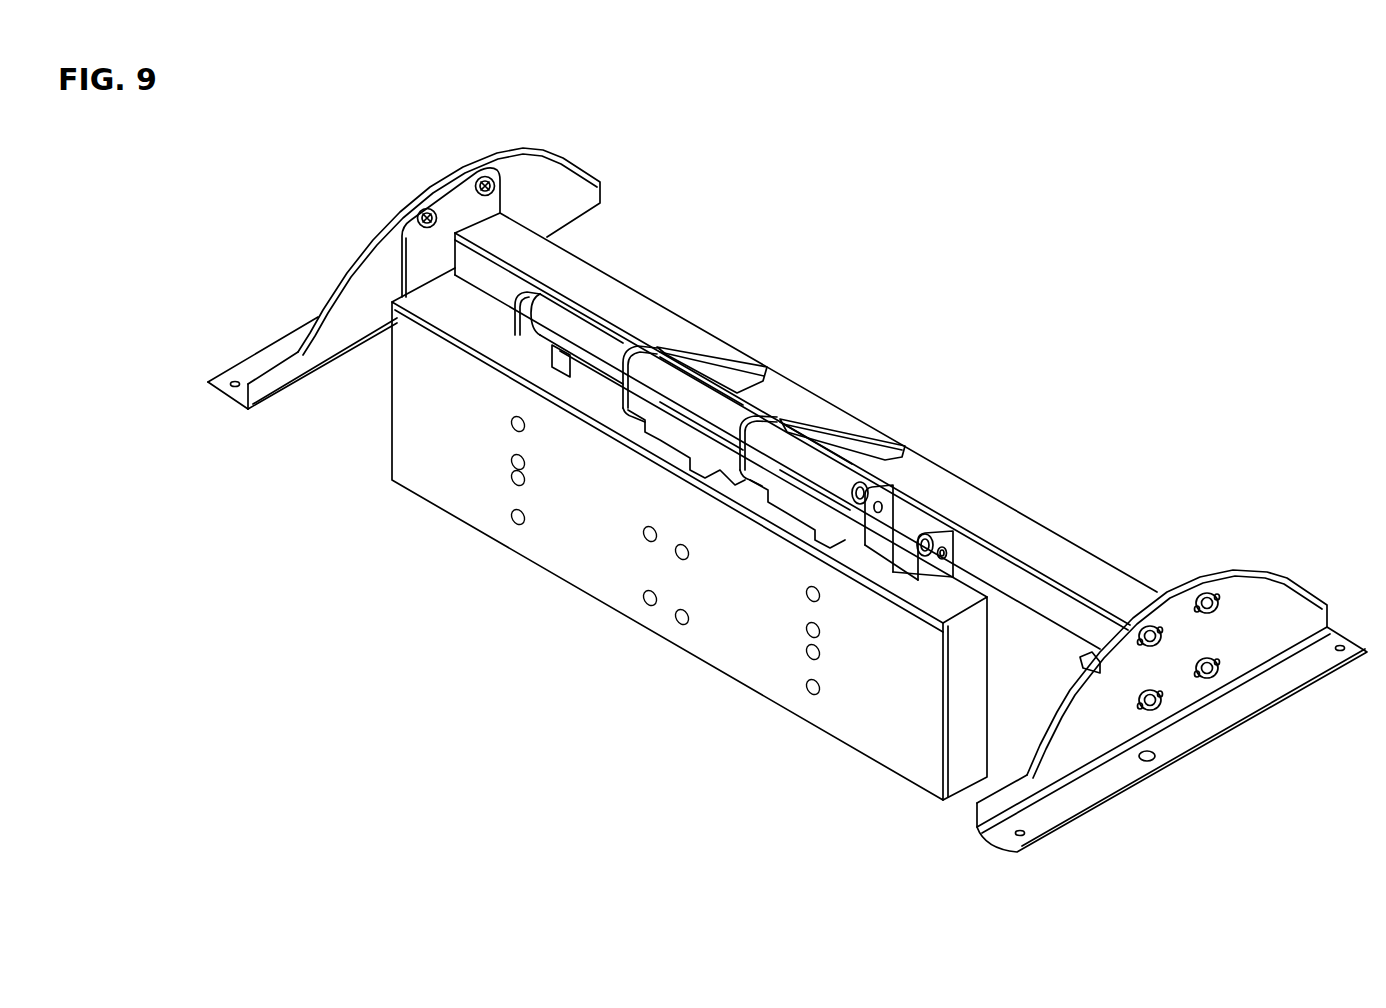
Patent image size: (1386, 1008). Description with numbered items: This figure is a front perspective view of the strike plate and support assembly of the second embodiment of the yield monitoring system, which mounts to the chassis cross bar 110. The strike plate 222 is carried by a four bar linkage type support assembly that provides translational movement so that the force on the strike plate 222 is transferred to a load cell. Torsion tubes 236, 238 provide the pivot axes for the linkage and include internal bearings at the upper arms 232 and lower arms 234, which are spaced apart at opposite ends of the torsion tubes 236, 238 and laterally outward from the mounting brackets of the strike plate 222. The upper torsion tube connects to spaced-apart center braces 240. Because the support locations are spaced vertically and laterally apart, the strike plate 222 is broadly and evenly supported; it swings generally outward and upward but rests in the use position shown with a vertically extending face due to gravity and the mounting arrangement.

The chassis cross bar 110 is at (1035, 544).
The strike plate 222 is at (706, 637).
The upper arms 232 is at (530, 350).
The lower arms 234 is at (950, 557).
The torsion tube 236 is at (913, 528).
The torsion tube 238 is at (837, 480).
The center braces 240 is at (737, 370).